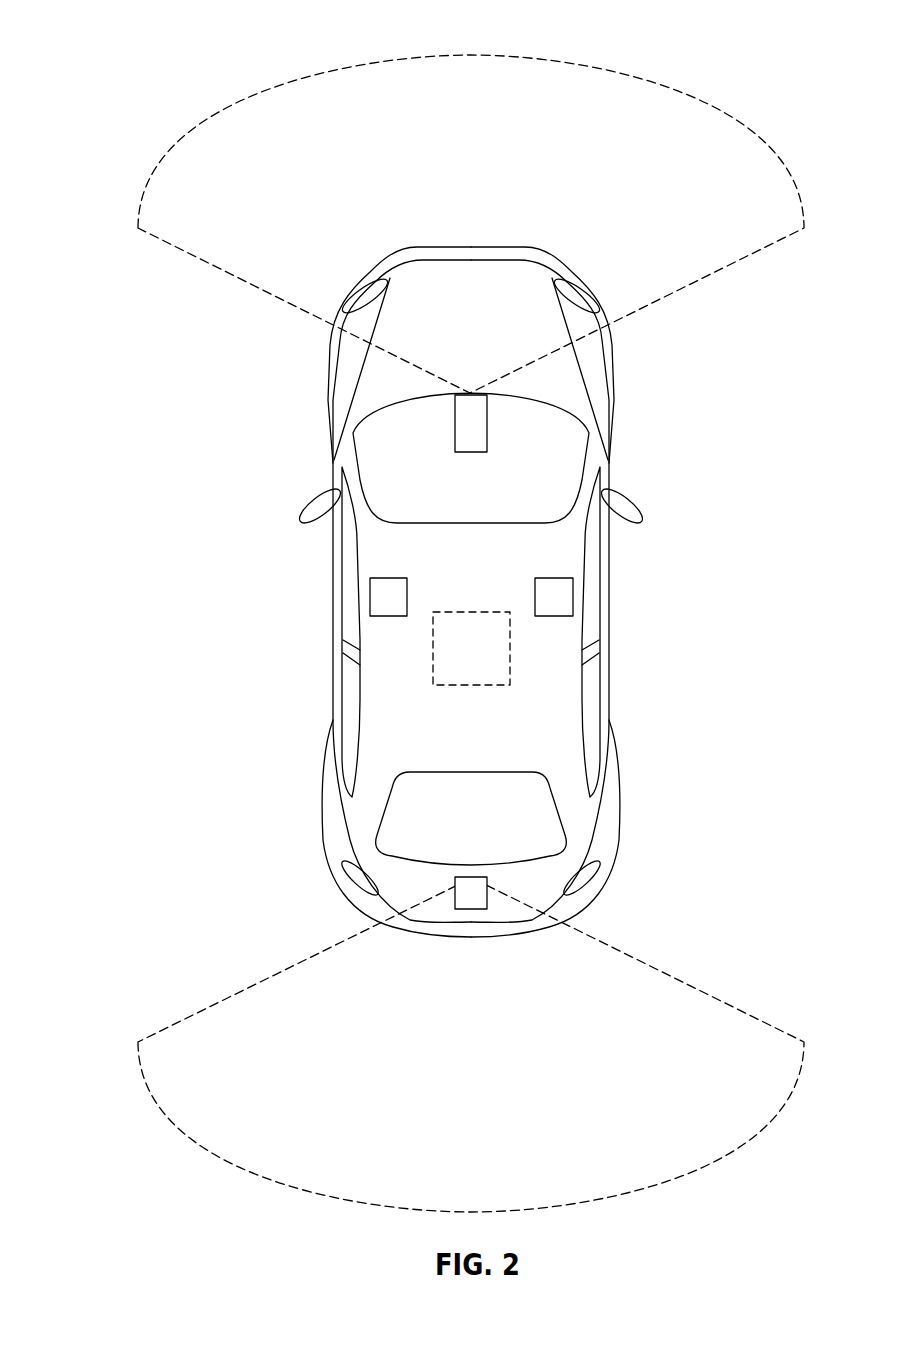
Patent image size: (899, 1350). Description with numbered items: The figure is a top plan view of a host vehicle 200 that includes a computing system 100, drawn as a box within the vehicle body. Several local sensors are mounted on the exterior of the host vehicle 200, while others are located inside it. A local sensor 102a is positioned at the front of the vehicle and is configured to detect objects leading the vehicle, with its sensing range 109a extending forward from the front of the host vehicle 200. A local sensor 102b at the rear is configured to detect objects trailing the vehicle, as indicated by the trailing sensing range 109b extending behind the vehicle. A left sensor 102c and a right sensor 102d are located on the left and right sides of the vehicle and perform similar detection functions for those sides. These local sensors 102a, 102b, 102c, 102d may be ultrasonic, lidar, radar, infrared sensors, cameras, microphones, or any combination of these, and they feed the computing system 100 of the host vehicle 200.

The host vehicle 200 is at (113, 38).
The computing system 100 is at (493, 660).
The local sensor 102a is at (473, 427).
The local sensor 102b is at (473, 902).
The left sensor 102c is at (382, 595).
The right sensor 102d is at (558, 597).
The leading sensing range 109a is at (735, 262).
The trailing sensing range 109b is at (717, 998).